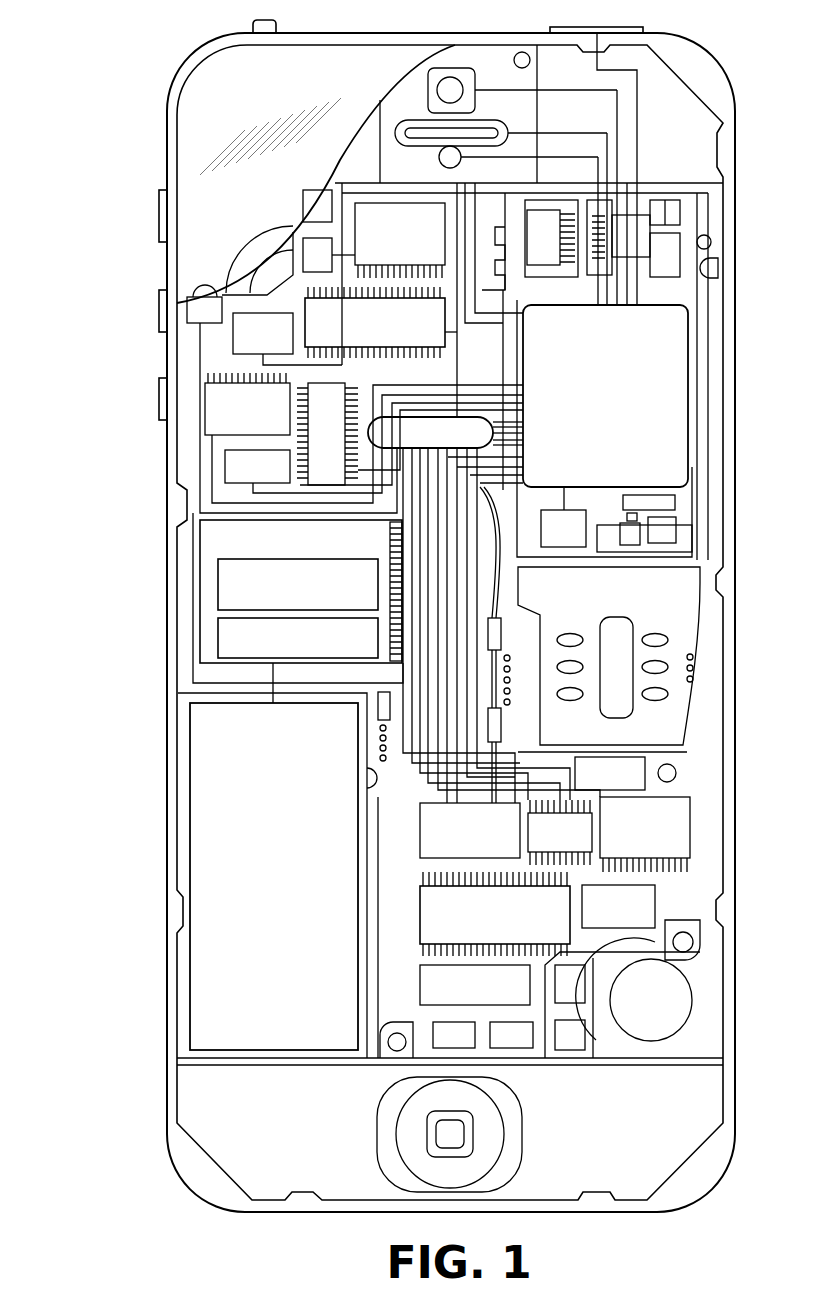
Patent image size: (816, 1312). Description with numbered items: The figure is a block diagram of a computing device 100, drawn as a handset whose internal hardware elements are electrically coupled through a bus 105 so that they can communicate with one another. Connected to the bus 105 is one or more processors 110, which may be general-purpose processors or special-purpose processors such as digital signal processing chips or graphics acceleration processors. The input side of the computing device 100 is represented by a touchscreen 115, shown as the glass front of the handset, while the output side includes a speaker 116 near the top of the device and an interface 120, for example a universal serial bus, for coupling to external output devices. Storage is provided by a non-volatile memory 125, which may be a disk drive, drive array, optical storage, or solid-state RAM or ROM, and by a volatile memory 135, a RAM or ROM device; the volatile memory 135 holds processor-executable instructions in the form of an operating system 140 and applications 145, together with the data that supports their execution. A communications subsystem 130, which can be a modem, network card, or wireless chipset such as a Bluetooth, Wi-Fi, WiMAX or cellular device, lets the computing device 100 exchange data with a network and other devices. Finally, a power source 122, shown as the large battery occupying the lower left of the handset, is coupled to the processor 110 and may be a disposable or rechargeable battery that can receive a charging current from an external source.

The computing device 100 is at (150, 78).
The bus 105 is at (430, 432).
The processor 110 is at (605, 396).
The touchscreen 115 is at (193, 145).
The speaker 116 is at (413, 113).
The interface 120 is at (203, 400).
The power source 122 is at (274, 876).
The non-volatile memory 125 is at (200, 527).
The communications subsystem 130 is at (375, 322).
The volatile memory 135 is at (495, 914).
The operating system 140 is at (218, 588).
The applications 145 is at (218, 643).